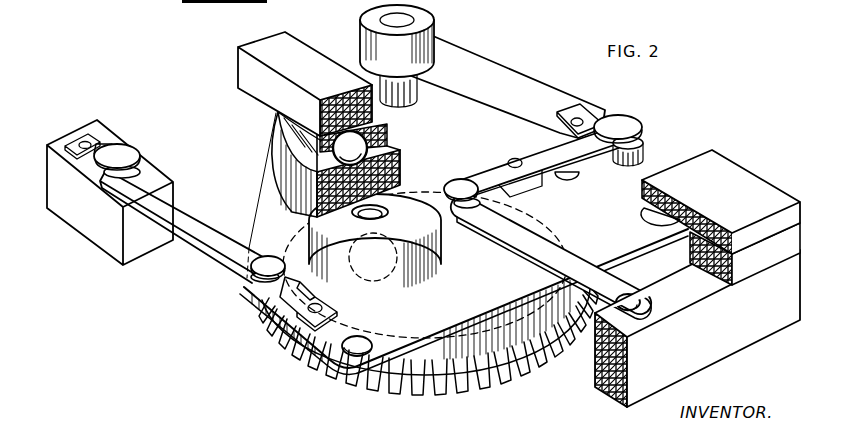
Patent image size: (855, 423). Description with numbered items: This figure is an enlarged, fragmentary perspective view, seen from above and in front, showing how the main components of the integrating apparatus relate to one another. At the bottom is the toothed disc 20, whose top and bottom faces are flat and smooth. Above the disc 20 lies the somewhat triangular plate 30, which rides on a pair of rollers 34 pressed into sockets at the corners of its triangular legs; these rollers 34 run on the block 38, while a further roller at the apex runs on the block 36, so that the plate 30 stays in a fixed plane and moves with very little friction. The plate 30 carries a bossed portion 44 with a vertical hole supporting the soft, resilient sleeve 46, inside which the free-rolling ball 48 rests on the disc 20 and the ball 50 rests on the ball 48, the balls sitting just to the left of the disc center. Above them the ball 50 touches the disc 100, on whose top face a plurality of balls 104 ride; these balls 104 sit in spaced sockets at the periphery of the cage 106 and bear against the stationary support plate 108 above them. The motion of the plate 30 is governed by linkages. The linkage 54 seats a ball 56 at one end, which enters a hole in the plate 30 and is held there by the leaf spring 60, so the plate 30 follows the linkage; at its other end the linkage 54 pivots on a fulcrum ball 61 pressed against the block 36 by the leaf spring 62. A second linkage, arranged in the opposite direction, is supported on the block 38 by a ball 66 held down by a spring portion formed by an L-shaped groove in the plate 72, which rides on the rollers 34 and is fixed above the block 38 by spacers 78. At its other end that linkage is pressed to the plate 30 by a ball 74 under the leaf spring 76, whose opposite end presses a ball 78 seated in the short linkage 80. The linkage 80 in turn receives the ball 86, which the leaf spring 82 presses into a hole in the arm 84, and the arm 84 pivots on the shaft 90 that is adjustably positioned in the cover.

The toothed disc 20 is at (407, 365).
The plate 30 is at (267, 320).
The rollers 34 is at (348, 350).
The block 36 is at (110, 250).
The block 38 is at (743, 343).
The bossed portion 44 is at (416, 272).
The sleeve 46 is at (388, 205).
The ball 48 is at (397, 287).
The ball 50 is at (385, 218).
The linkage 54 is at (188, 202).
The ball 56 is at (248, 293).
The leaf spring 60 is at (247, 277).
The ball 61 is at (137, 172).
The leaf spring 62 is at (124, 152).
The ball 66 is at (631, 296).
The plate 72 is at (733, 167).
The ball 74 is at (466, 195).
The leaf spring 76 is at (503, 167).
The spacers / ball 78 is at (565, 180).
The linkage 80 is at (630, 162).
The leaf spring 82 is at (617, 115).
The arm 84 is at (467, 63).
The ball 86 is at (643, 130).
The shaft 90 is at (405, 20).
The disc 100 is at (280, 173).
The balls 104 is at (288, 125).
The cage 106 is at (310, 157).
The support plate 108 is at (245, 62).